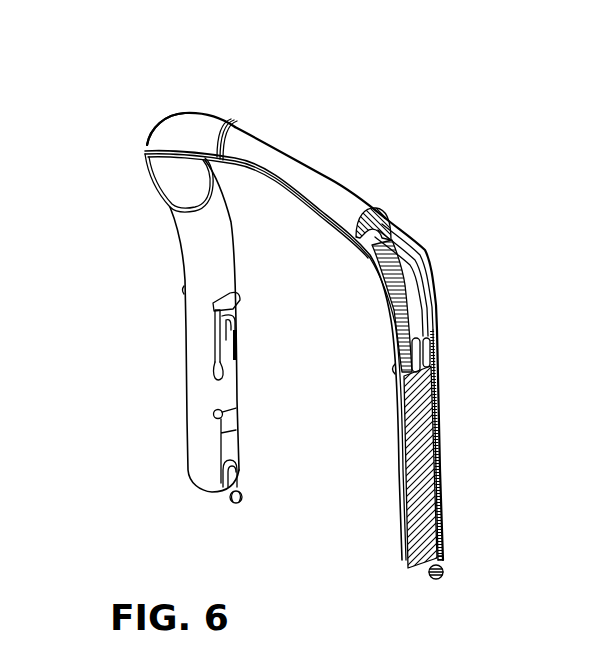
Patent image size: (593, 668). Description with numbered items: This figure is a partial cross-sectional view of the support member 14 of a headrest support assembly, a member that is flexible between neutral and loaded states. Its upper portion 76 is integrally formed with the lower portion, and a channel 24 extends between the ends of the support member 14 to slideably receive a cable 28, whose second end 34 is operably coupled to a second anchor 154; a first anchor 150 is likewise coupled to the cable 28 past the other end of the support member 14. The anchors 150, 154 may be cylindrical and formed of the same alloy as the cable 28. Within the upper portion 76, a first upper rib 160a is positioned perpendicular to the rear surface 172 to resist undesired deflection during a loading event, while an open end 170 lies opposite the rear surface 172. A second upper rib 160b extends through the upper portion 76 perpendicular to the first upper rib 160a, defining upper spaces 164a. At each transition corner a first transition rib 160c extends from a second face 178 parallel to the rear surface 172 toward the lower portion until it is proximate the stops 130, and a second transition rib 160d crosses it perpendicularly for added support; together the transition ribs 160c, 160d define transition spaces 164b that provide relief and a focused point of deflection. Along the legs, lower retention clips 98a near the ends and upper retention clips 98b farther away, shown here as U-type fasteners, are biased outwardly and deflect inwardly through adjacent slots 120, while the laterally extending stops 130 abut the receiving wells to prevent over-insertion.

The support member 14 is at (113, 122).
The open end 170 is at (146, 144).
The second upper rib 160b is at (235, 120).
The upper spaces 164a is at (265, 168).
The rear surface 172 is at (298, 168).
The upper portion 76 is at (361, 191).
The second face 178 is at (409, 247).
The channel 24 is at (427, 249).
The transition spaces 164b is at (415, 279).
The second transition rib 160d is at (437, 318).
The first transition rib 160c is at (396, 316).
The stops 130 is at (183, 289).
The upper retention clips 98b is at (216, 332).
The slots 120 is at (215, 392).
The lower retention clips 98a is at (195, 484).
The first anchor 150 is at (231, 503).
The first upper rib 160a is at (167, 209).
The cable 28 is at (439, 463).
The second end of the cable 34 is at (445, 560).
The second anchor 154 is at (430, 581).